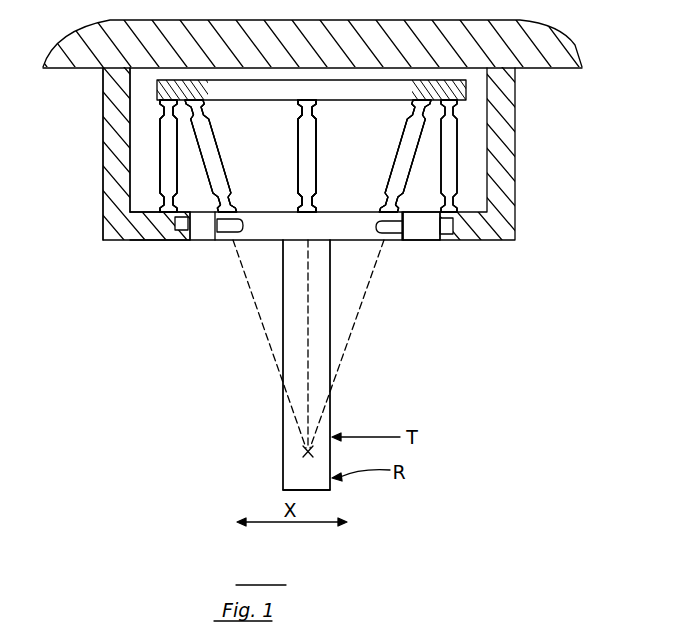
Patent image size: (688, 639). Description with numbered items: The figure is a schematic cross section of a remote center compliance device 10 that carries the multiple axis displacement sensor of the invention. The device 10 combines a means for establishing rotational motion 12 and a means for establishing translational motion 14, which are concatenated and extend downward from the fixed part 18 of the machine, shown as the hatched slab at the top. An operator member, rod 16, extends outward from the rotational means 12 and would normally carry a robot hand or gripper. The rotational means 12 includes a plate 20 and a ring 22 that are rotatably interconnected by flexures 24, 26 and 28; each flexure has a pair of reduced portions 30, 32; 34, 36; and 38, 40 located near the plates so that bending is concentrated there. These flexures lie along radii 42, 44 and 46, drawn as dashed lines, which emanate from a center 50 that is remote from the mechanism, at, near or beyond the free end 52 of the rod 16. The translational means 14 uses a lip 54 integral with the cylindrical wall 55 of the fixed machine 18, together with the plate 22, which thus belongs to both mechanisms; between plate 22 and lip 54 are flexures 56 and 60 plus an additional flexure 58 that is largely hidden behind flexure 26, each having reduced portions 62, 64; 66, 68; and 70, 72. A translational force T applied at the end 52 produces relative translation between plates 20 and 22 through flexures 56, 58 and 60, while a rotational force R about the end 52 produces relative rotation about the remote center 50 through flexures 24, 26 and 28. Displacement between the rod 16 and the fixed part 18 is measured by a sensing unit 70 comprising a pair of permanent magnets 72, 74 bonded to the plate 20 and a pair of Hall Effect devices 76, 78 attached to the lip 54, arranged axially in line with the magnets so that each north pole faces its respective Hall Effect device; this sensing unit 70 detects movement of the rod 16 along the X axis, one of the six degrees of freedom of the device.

The remote center compliance device 10 is at (511, 313).
The means for establishing rotational motion 12 is at (228, 280).
The means for establishing translational motion 14 is at (152, 133).
The rod 16 is at (330, 363).
The fixed part 18 is at (73, 68).
The plate 20 is at (421, 243).
The ring 22 is at (466, 93).
The flexure 24 is at (220, 152).
The flexure 26 is at (316, 150).
The flexure 28 is at (393, 168).
The reduced portion 30 is at (205, 108).
The reduced portion 32 is at (232, 200).
The reduced portion 34 is at (316, 112).
The reduced portion 36 is at (316, 200).
The reduced portion 38 is at (412, 108).
The reduced portion 40 is at (383, 203).
The radius 42 is at (254, 294).
The radius 44 is at (310, 324).
The radius 46 is at (364, 285).
The center 50 is at (306, 450).
The free end 52 is at (290, 465).
The lip 54 is at (152, 241).
The cylindrical wall 55 is at (103, 213).
The flexure 56 is at (160, 160).
The flexure 58 is at (298, 160).
The flexure 60 is at (455, 150).
The reduced portion 62 is at (164, 111).
The reduced portion 64 is at (162, 200).
The reduced portion 66 is at (298, 112).
The reduced portion 68 is at (298, 200).
The sensing unit 70 is at (457, 120).
The permanent magnet 72 is at (457, 198).
The permanent magnet 74 is at (380, 242).
The Hall Effect device 76 is at (188, 241).
The Hall Effect device 78 is at (447, 236).